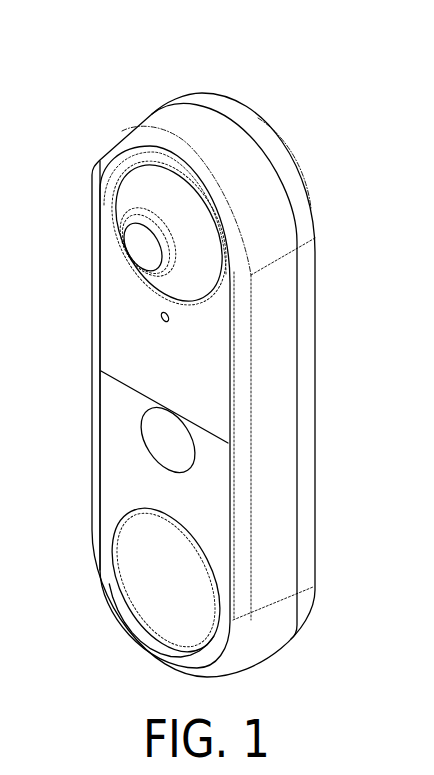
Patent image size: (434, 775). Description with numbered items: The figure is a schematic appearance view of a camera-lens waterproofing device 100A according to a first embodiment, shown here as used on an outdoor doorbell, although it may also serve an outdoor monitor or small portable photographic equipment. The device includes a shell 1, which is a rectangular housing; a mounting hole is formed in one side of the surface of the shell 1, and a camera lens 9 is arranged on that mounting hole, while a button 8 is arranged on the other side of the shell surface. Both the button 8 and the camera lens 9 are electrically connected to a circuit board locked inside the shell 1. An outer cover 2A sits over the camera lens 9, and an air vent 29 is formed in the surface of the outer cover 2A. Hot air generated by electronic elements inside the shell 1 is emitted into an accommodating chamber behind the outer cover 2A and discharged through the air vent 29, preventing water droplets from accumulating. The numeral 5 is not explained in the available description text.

The camera-lens waterproofing device 100A is at (230, 58).
The shell 1 is at (275, 434).
The front panel 5 is at (125, 343).
The outer cover 2A is at (132, 193).
The camera lens 9 is at (138, 238).
The air vent 29 is at (190, 296).
The button 8 is at (147, 575).